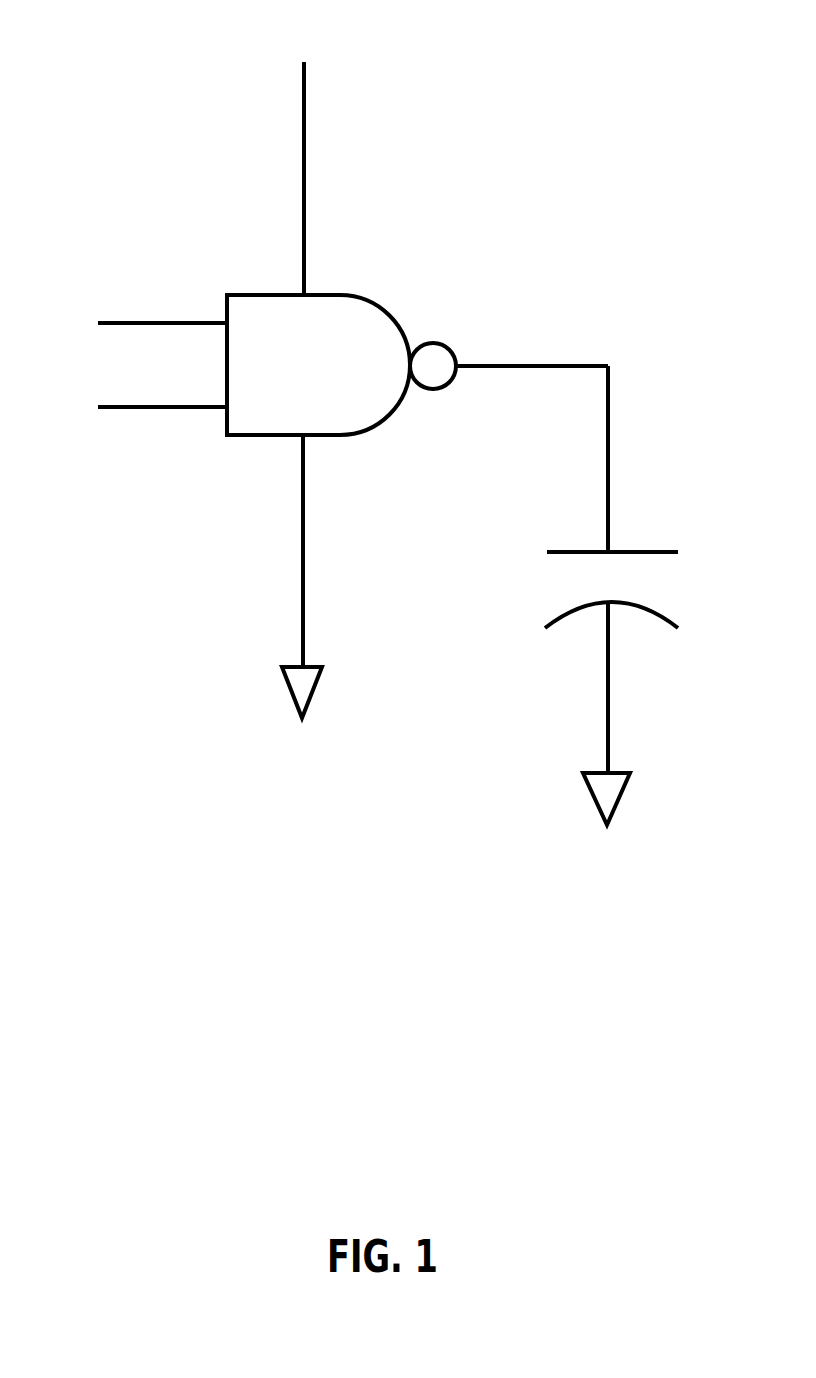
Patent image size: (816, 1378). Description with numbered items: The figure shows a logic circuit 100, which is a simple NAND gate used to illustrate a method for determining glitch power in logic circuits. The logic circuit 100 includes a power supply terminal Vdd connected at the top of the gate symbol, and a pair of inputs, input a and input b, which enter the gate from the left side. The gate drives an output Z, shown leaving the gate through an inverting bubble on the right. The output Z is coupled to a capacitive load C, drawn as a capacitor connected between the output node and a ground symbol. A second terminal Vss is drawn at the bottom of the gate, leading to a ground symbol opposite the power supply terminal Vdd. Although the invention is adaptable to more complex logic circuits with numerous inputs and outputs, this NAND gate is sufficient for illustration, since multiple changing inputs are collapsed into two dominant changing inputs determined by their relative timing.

The logic circuit 100 is at (133, 160).
The input a is at (184, 322).
The input b is at (185, 402).
The output Z is at (532, 336).
The power supply terminal Vdd is at (305, 149).
The ground supply voltage Vss is at (298, 610).
The capacitive load C is at (633, 595).